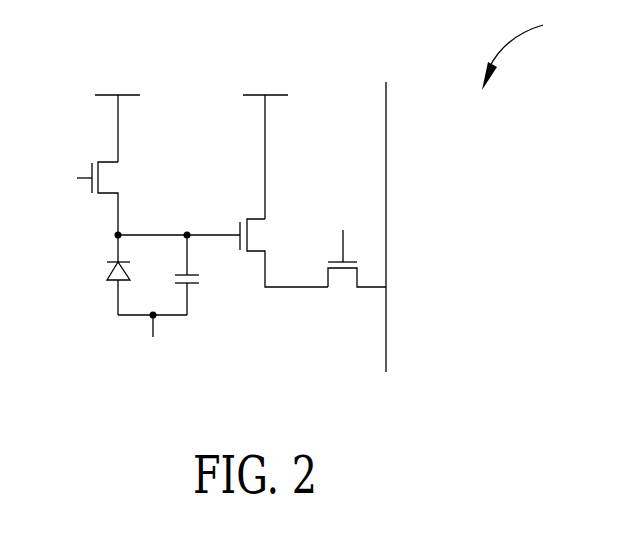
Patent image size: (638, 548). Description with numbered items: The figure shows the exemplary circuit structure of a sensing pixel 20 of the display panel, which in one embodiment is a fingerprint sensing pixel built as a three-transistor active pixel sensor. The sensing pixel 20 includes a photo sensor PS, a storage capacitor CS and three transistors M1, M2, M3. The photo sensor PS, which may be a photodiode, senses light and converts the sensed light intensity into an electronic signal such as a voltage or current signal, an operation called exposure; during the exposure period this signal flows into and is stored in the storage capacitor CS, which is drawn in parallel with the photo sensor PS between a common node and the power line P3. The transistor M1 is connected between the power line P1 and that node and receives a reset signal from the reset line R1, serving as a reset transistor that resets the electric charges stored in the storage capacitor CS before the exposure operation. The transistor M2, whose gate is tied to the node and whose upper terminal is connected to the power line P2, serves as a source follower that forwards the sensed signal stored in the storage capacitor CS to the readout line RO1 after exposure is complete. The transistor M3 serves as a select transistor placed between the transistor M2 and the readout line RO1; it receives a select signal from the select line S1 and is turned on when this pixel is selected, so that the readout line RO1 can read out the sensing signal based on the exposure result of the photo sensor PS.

The sensing pixel 20 is at (531, 49).
The power line P1 is at (117, 111).
The power line P2 is at (265, 140).
The power line P3 is at (152, 342).
The reset line R1 is at (66, 181).
The select line S1 is at (344, 229).
The transistor M1 is at (127, 198).
The transistor M2 is at (284, 253).
The transistor M3 is at (354, 292).
The photo sensor PS is at (100, 275).
The storage capacitor CS is at (208, 275).
The readout line RO1 is at (385, 245).